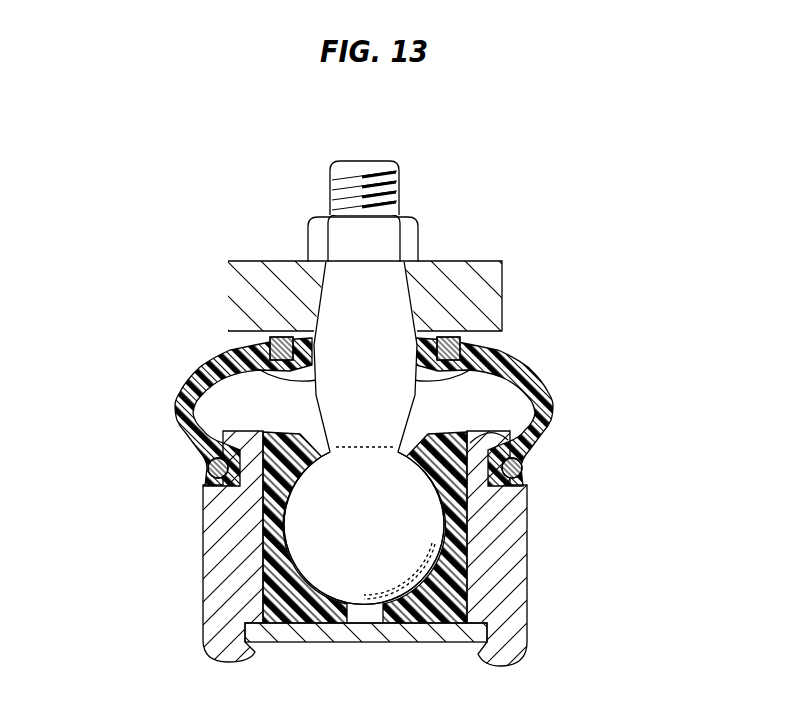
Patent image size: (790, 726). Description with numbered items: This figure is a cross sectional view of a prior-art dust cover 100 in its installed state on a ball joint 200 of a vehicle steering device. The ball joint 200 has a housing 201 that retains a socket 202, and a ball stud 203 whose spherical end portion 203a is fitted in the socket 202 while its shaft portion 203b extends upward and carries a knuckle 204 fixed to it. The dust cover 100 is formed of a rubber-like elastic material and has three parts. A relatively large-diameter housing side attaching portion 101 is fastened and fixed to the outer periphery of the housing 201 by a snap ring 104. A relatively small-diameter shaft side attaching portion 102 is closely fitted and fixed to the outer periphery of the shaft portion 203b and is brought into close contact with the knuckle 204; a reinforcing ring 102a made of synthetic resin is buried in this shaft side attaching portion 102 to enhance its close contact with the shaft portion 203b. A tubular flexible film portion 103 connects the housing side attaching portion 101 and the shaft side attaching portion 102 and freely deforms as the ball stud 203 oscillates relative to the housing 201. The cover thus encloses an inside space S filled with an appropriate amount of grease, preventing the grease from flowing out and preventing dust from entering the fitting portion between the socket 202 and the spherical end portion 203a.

The dust cover 100 is at (435, 413).
The housing side attaching portion 101 is at (500, 440).
The shaft side attaching portion 102 is at (419, 292).
The reinforcing ring 102a is at (440, 334).
The flexible film portion 103 is at (556, 398).
The snap ring 104 is at (525, 469).
The ball joint 200 is at (341, 572).
The housing 201 is at (515, 572).
The socket 202 is at (290, 648).
The ball stud 203 is at (261, 348).
The spherical end portion 203a is at (320, 537).
The shaft portion 203b is at (333, 380).
The knuckle 204 is at (265, 276).
The inside space S is at (460, 396).